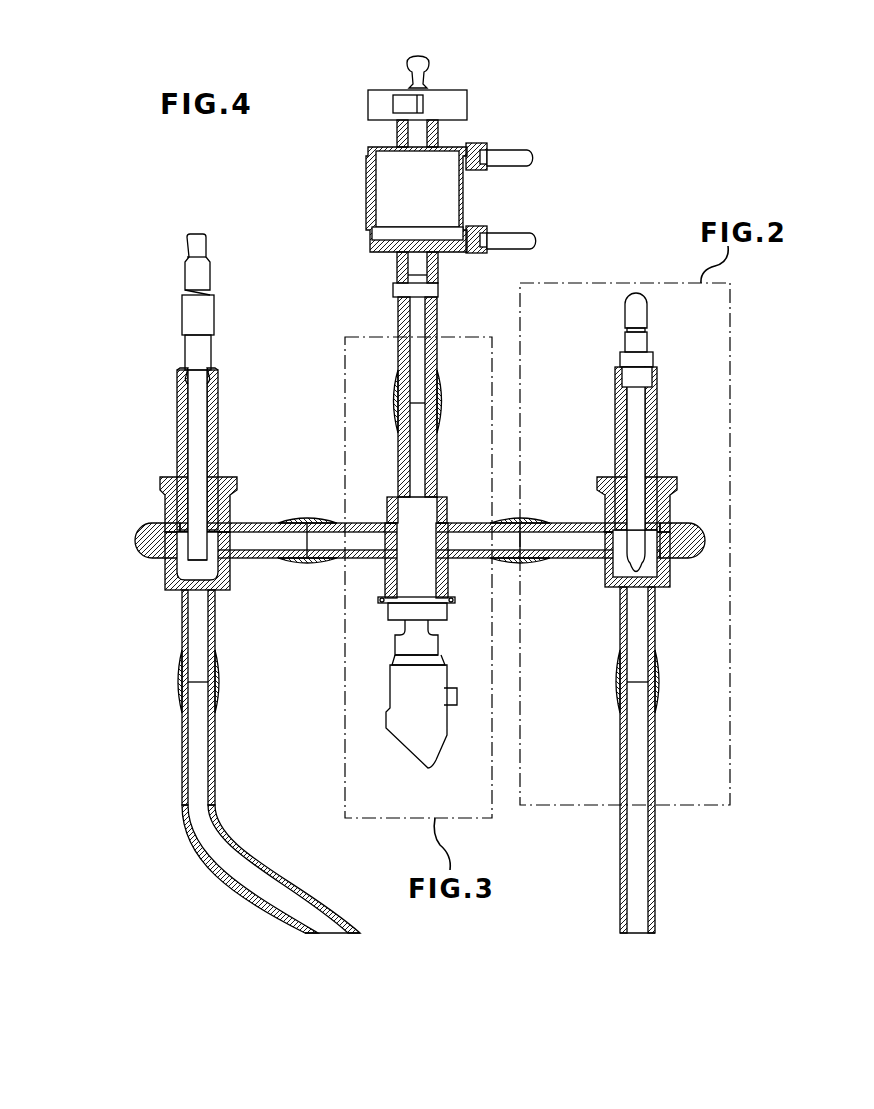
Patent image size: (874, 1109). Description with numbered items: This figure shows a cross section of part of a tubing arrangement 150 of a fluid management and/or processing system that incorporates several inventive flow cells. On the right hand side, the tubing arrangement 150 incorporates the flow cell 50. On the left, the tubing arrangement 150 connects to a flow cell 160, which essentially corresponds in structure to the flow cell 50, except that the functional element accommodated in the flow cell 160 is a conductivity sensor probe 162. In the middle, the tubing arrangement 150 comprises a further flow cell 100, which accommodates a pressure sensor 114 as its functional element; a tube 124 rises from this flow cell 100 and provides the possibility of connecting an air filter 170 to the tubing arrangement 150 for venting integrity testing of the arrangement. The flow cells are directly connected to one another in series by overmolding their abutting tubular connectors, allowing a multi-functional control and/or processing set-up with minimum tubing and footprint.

The tubing arrangement 150 is at (610, 152).
The air filter 170 is at (510, 190).
The connecting tube 124 is at (400, 470).
The flow cell 100 is at (373, 604).
The pressure sensor 114 is at (402, 762).
The conductivity sensor probe 162 is at (216, 312).
The flow cell 160 is at (158, 568).
The flow cell 50 is at (692, 500).